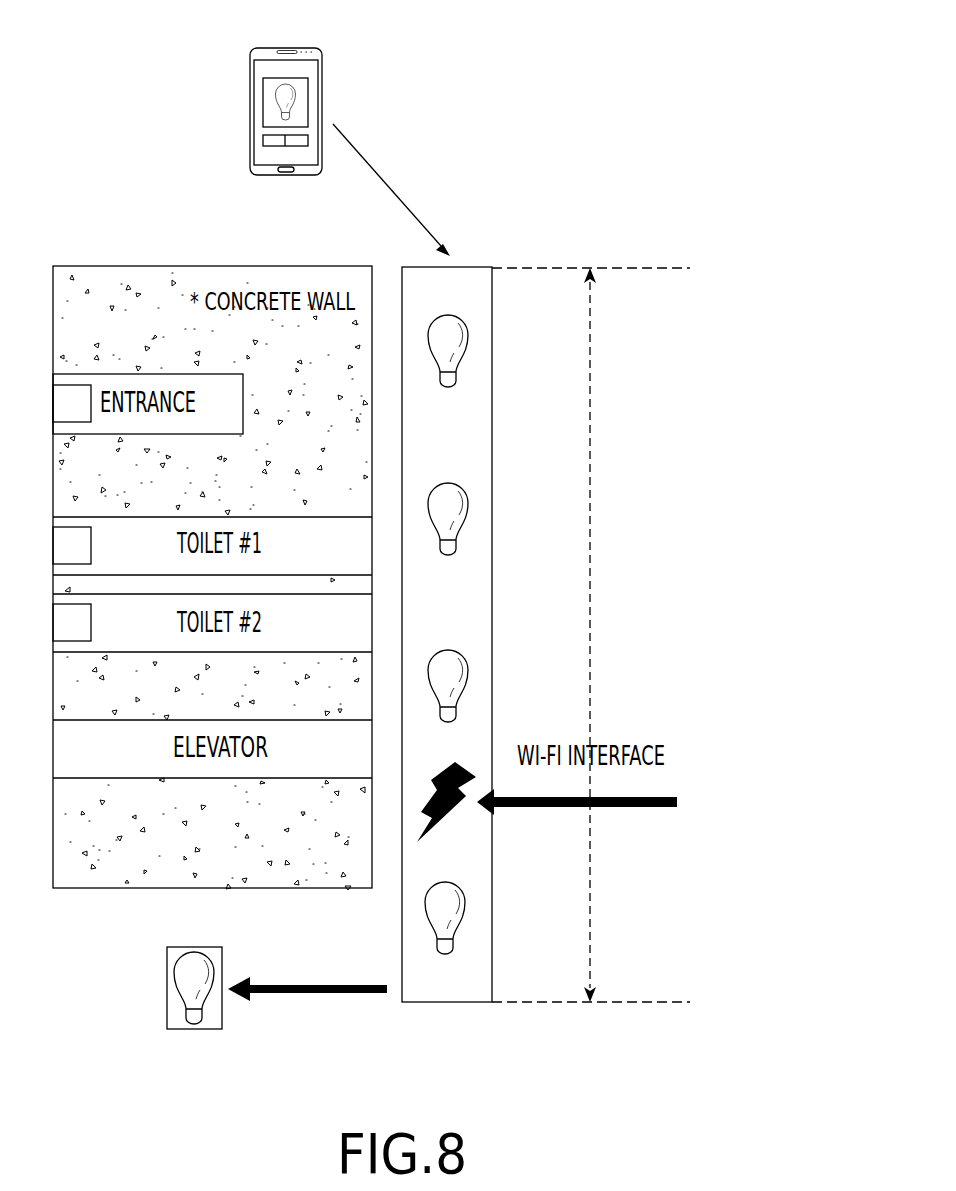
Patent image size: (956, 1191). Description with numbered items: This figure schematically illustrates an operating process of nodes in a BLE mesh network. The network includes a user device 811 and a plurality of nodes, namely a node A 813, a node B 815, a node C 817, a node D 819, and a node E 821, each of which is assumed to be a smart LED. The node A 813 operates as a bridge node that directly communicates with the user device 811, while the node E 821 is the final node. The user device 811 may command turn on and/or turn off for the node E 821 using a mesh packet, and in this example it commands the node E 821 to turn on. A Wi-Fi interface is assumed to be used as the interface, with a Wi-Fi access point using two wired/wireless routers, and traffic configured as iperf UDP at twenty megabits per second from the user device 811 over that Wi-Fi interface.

The user device 811 is at (284, 46).
The node A 813 is at (447, 313).
The node B 815 is at (447, 481).
The node C 817 is at (447, 648).
The node D 819 is at (444, 879).
The node E 821 is at (191, 949).